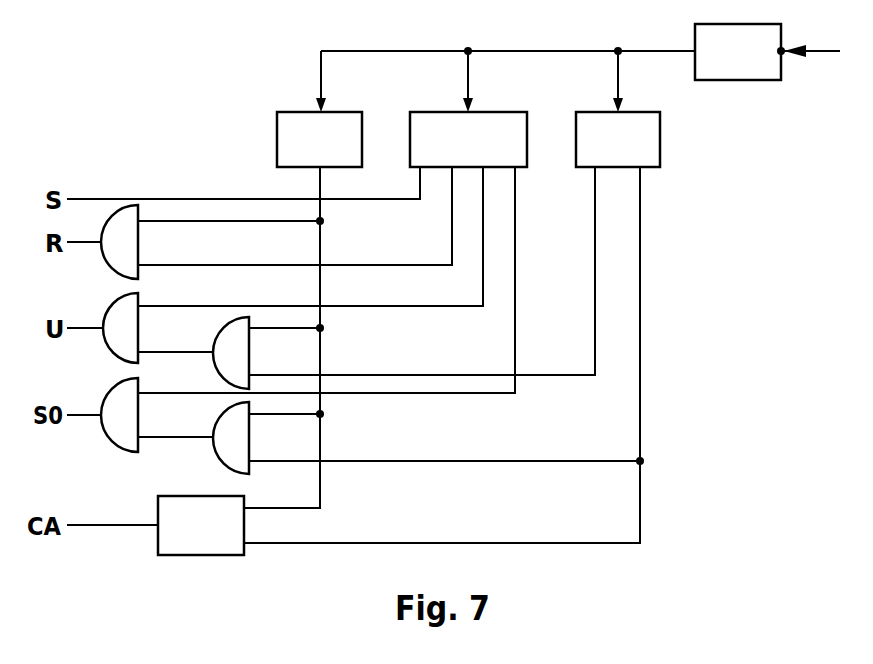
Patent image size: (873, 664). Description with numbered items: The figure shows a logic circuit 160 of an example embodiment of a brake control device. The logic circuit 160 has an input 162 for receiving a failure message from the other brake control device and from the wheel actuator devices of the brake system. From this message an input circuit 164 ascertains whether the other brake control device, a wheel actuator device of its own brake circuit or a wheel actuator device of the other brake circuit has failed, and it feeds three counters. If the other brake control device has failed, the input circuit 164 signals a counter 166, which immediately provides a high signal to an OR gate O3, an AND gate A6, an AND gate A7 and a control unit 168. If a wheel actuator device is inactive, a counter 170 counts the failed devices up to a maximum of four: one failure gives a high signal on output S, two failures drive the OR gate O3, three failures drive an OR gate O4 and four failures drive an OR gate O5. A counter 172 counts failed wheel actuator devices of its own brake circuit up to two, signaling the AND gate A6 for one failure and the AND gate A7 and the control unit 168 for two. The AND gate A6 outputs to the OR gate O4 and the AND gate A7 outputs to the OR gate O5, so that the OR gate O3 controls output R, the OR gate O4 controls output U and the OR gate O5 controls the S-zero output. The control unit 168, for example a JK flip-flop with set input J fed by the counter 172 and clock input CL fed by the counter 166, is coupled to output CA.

The logic circuit 160 is at (133, 92).
The input 162 is at (784, 53).
The input circuit 164 is at (738, 81).
The counter 166 is at (295, 111).
The control unit 168 is at (203, 556).
The counter 170 is at (441, 111).
The counter 172 is at (591, 111).
The OR gate O3 is at (141, 251).
The OR gate O4 is at (141, 337).
The OR gate O5 is at (141, 423).
The AND gate A6 is at (252, 360).
The AND gate A7 is at (252, 445).